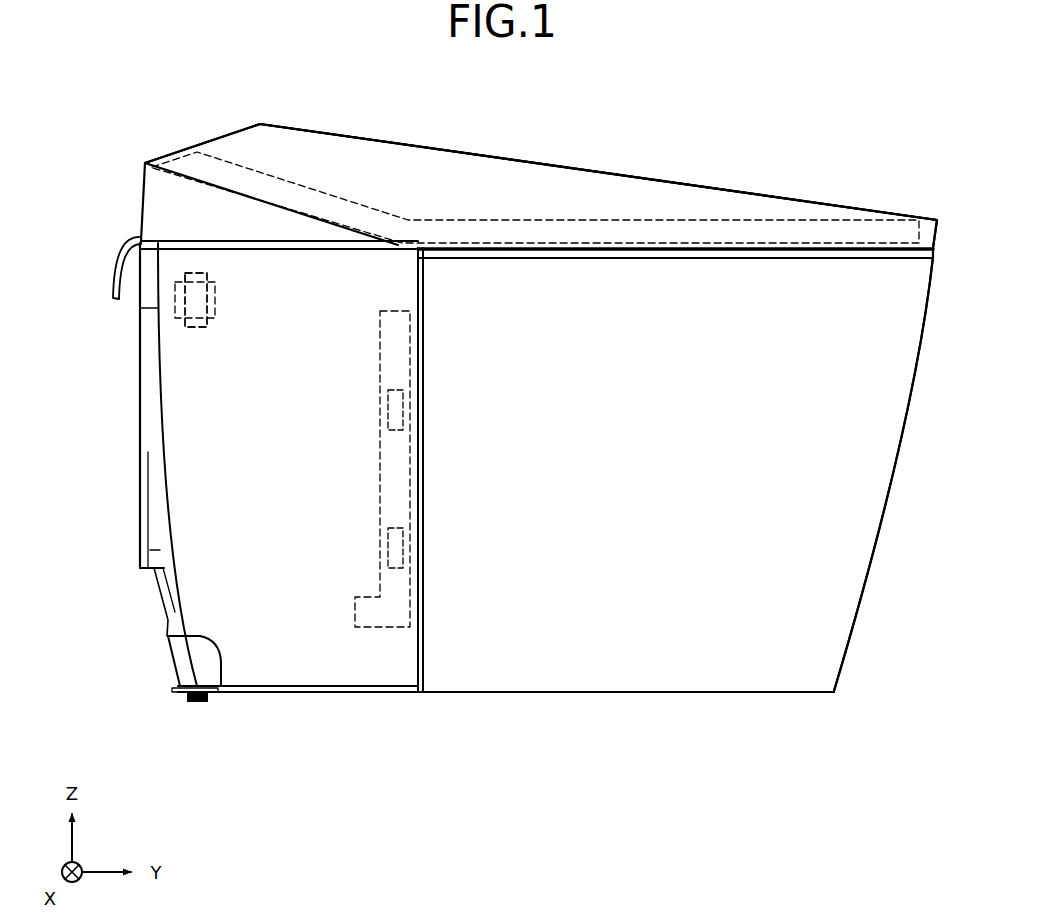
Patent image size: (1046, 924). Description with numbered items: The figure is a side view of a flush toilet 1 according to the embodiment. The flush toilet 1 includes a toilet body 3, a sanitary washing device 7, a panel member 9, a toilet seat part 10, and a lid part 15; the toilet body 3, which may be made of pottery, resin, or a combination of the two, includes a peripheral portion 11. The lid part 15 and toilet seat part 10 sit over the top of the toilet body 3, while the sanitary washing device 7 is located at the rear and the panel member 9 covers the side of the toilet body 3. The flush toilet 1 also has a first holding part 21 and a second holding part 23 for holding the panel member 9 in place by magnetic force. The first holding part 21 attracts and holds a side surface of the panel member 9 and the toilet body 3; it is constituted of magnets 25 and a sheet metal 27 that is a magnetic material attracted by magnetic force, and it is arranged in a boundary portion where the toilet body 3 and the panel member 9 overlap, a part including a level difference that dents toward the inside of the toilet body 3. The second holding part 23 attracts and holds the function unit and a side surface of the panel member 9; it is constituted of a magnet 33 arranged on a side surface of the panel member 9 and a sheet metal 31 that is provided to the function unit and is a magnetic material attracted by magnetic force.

The flush toilet 1 is at (886, 177).
The toilet body 3 is at (884, 530).
The sanitary washing device 7 is at (155, 206).
The panel member 9 is at (268, 667).
The toilet seat part 10 is at (722, 236).
The peripheral portion 11 is at (650, 668).
The lid part 15 is at (558, 181).
The first holding part 21 is at (420, 486).
The second holding part 23 is at (176, 327).
The magnets 25 is at (382, 415).
The sheet metal 27 is at (380, 628).
The sheet metal 31 is at (175, 313).
The magnet 33 is at (197, 332).